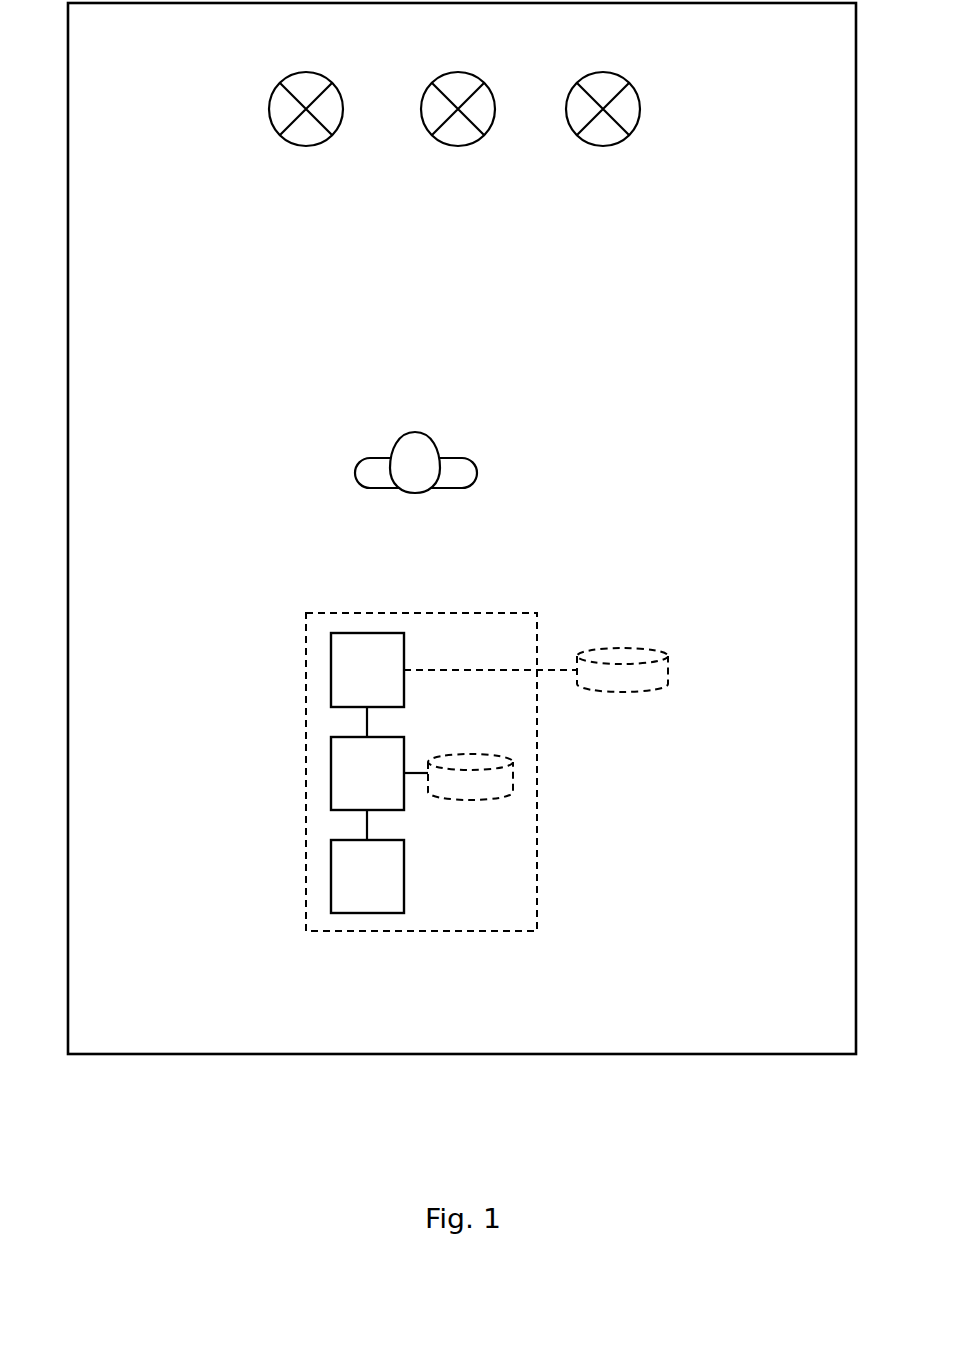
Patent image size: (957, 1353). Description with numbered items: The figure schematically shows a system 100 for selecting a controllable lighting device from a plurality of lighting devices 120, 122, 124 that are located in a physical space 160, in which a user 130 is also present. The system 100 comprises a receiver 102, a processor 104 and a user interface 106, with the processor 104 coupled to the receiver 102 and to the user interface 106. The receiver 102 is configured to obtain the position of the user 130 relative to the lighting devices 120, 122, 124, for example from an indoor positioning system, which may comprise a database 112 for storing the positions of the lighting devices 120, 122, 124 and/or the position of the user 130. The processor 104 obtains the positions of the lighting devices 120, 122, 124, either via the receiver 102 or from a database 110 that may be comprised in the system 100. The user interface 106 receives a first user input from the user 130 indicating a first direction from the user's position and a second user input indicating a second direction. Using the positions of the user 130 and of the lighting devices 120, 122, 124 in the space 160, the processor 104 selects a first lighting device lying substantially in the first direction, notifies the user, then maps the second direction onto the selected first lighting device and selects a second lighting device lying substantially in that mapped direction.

The system 100 is at (424, 827).
The receiver 102 is at (343, 671).
The processor 104 is at (343, 775).
The user interface 106 is at (343, 876).
The database 110 is at (497, 783).
The database 112 is at (652, 672).
The lighting device 120 is at (306, 148).
The lighting device 122 is at (457, 148).
The lighting device 124 is at (601, 148).
The user 130 is at (373, 472).
The physical space 160 is at (267, 1055).